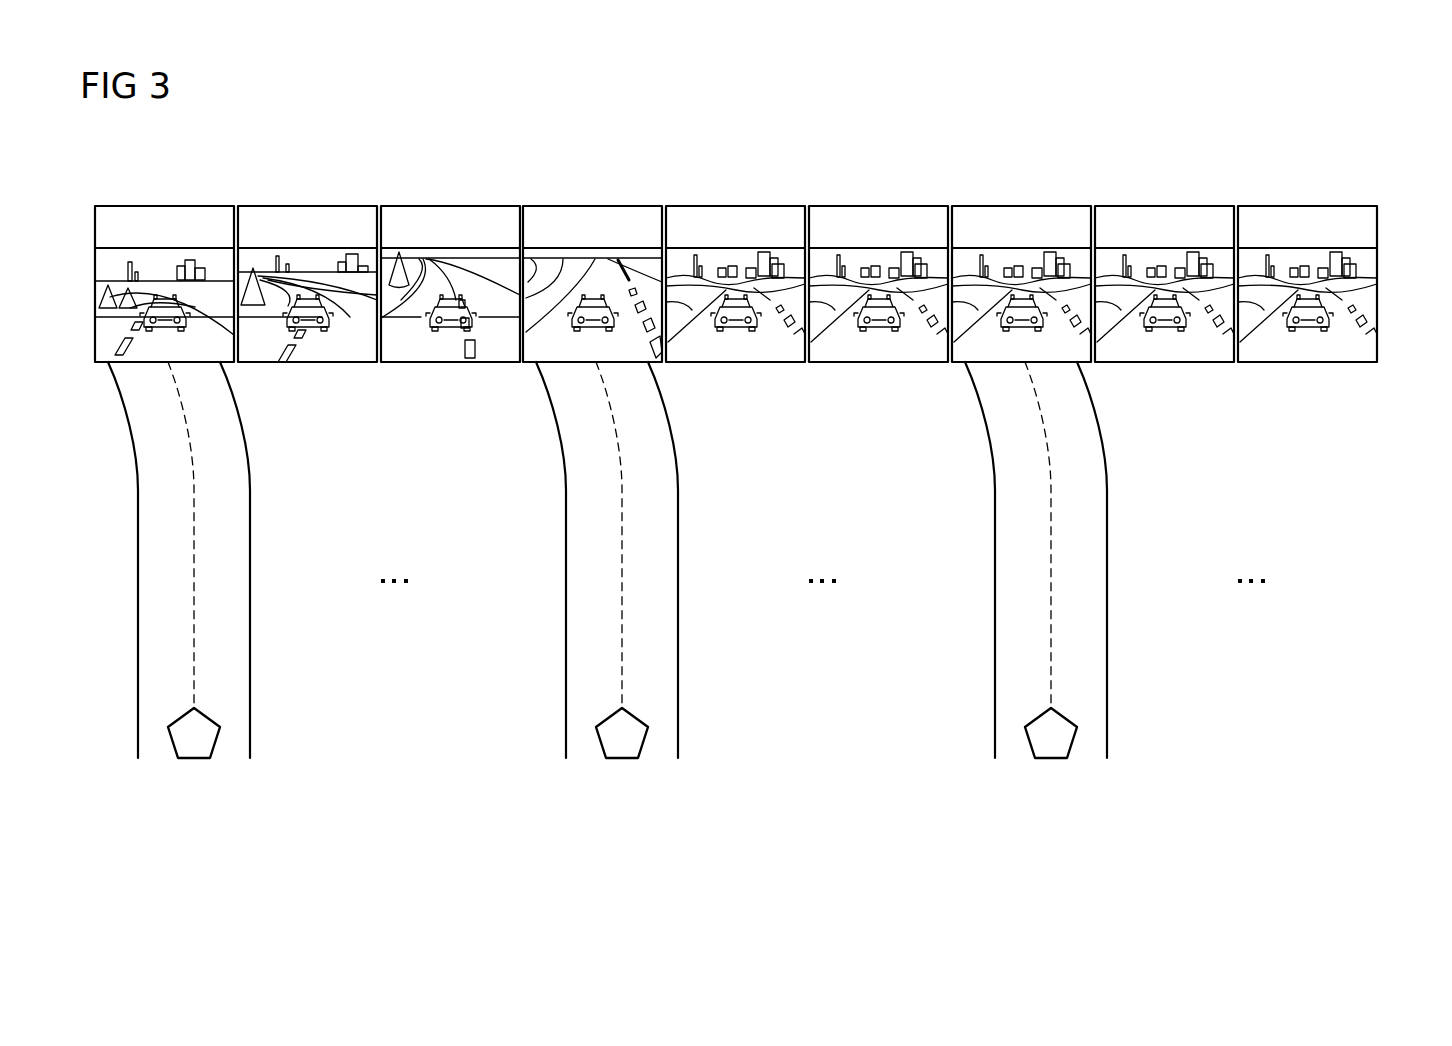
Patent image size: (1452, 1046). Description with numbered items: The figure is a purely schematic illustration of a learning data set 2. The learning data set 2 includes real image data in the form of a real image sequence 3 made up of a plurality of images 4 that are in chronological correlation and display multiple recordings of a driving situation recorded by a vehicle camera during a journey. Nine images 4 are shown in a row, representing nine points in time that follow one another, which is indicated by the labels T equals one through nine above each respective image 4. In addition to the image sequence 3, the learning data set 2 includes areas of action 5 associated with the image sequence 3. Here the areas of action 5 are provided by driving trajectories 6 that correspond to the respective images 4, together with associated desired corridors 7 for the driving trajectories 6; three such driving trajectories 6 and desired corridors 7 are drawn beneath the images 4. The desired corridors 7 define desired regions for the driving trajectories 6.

The learning data set 2 is at (1251, 177).
The real image sequence 3 is at (1388, 291).
The image 4 is at (220, 262).
The area of action 5 is at (192, 779).
The driving trajectory 6 is at (196, 617).
The desired corridor 7 is at (250, 683).